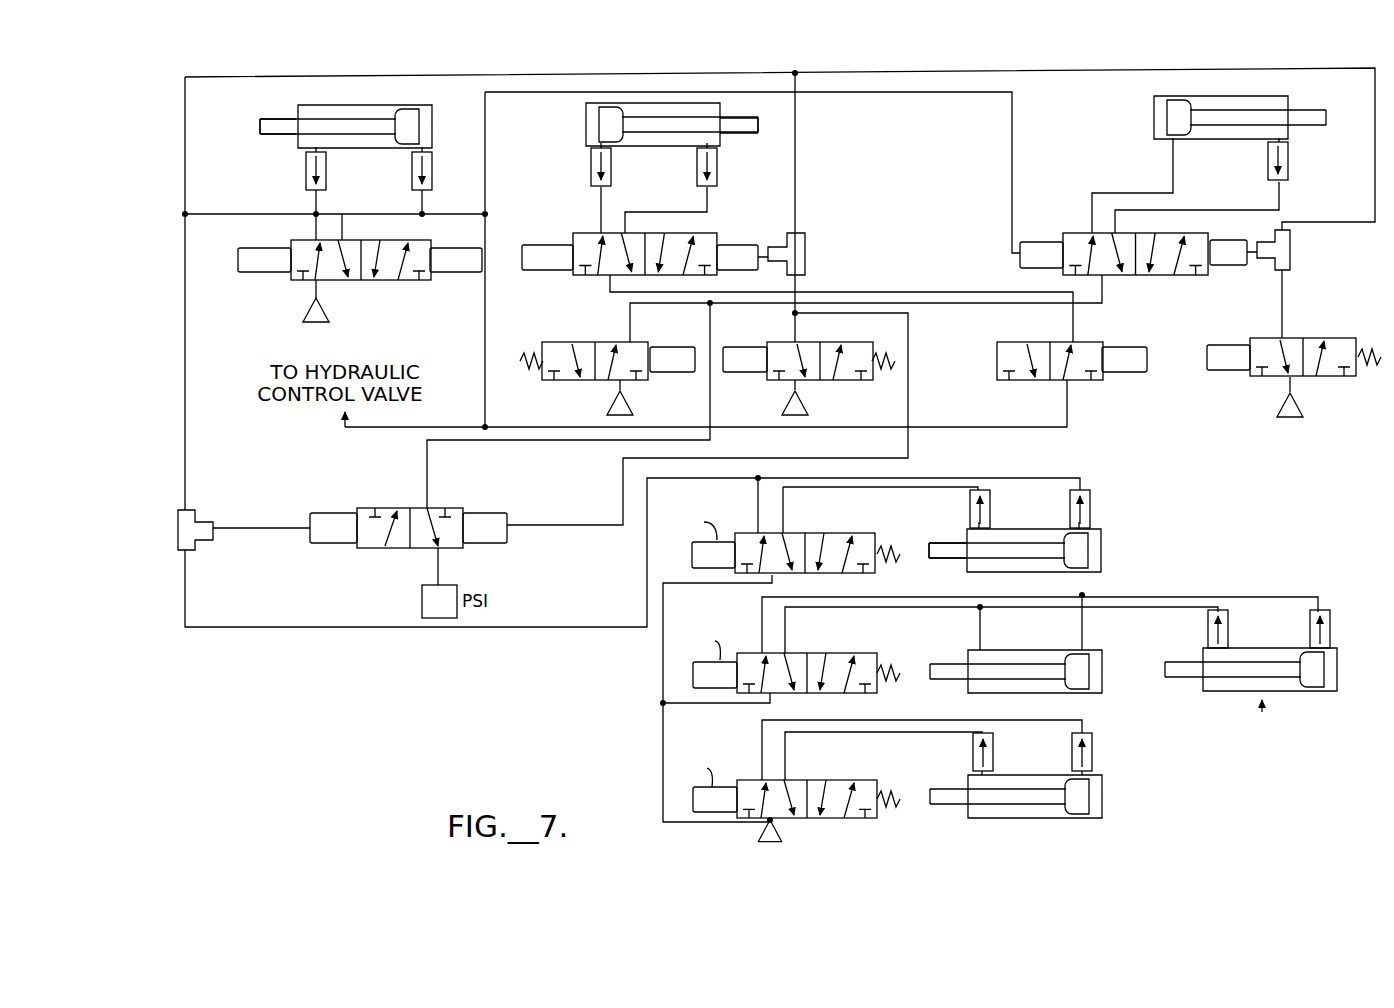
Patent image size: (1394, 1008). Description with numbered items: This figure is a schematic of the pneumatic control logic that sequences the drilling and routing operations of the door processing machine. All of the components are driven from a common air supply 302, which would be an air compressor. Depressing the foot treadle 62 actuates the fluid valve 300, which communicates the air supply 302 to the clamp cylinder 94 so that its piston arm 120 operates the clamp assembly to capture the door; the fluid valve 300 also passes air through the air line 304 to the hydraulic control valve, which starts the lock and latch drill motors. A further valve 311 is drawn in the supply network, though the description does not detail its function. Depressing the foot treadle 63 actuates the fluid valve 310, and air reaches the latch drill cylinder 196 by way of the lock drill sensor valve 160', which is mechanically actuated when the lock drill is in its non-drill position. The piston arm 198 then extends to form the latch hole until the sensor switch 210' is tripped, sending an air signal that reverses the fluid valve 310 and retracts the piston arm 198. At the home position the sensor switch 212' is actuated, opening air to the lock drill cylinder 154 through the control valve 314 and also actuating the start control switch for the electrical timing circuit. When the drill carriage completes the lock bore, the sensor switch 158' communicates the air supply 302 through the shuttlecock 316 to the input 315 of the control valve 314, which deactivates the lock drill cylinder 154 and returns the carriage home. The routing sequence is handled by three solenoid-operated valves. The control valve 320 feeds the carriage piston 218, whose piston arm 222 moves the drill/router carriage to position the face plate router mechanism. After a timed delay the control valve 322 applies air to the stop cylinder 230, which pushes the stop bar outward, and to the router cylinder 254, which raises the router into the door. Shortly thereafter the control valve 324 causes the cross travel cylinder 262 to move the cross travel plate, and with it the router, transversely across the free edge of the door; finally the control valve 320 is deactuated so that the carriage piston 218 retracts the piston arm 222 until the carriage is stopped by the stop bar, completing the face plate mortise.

The clamp cylinder 94 is at (302, 106).
The piston arm 120 is at (273, 136).
The foot treadle 62 is at (434, 244).
The air line 304 is at (488, 216).
The fluid valve 300 is at (365, 281).
The air supply 302 is at (328, 320).
The latch drill cylinder 196 is at (590, 122).
The piston arm 198 is at (728, 132).
The fluid valve 310 is at (688, 234).
The foot treadle 63 is at (555, 274).
The sensor switch 212' is at (607, 343).
The sensor switch 210' is at (809, 343).
The lock drill cylinder 154 is at (1284, 97).
The input of control valve 315 is at (1214, 238).
The shuttlecock 316 is at (1292, 254).
The control valve 314 is at (1168, 276).
The lock drill sensor valve 160' is at (1079, 346).
The sensor switch 158' is at (1300, 343).
The air piloted valve 311 is at (438, 507).
The control valve 320 is at (845, 532).
The piston arm 222 is at (948, 540).
The carriage piston 218 is at (1003, 528).
The control valve 322 is at (840, 654).
The stop cylinder 230 is at (1092, 650).
The router cylinder 254 is at (1334, 648).
The control valve 324 is at (842, 781).
The cross travel cylinder 262 is at (1100, 776).